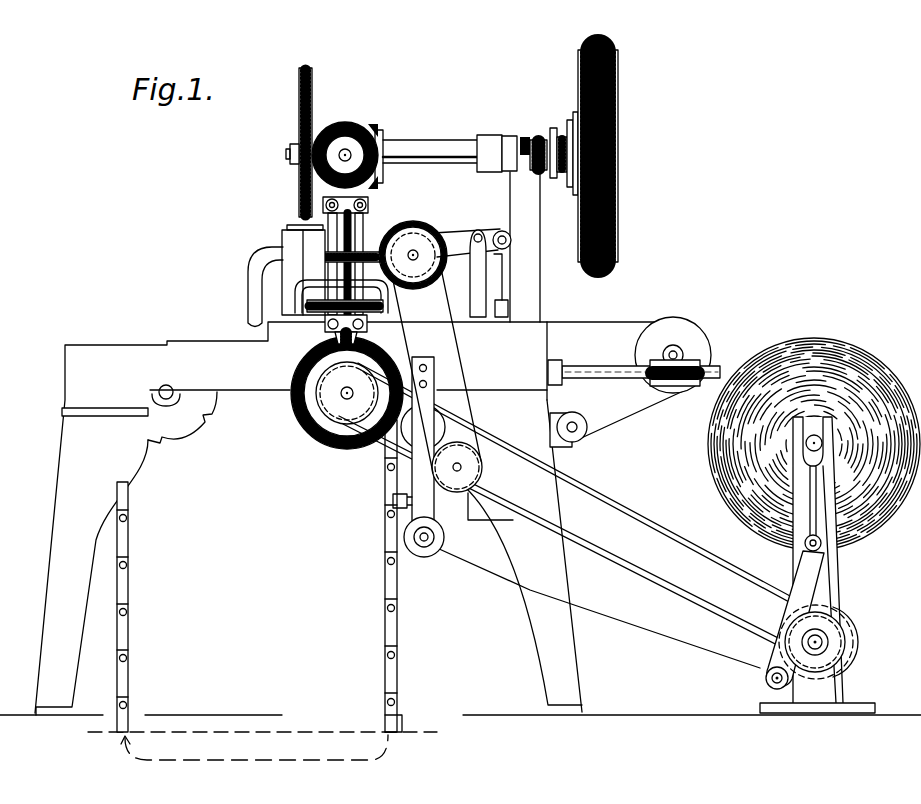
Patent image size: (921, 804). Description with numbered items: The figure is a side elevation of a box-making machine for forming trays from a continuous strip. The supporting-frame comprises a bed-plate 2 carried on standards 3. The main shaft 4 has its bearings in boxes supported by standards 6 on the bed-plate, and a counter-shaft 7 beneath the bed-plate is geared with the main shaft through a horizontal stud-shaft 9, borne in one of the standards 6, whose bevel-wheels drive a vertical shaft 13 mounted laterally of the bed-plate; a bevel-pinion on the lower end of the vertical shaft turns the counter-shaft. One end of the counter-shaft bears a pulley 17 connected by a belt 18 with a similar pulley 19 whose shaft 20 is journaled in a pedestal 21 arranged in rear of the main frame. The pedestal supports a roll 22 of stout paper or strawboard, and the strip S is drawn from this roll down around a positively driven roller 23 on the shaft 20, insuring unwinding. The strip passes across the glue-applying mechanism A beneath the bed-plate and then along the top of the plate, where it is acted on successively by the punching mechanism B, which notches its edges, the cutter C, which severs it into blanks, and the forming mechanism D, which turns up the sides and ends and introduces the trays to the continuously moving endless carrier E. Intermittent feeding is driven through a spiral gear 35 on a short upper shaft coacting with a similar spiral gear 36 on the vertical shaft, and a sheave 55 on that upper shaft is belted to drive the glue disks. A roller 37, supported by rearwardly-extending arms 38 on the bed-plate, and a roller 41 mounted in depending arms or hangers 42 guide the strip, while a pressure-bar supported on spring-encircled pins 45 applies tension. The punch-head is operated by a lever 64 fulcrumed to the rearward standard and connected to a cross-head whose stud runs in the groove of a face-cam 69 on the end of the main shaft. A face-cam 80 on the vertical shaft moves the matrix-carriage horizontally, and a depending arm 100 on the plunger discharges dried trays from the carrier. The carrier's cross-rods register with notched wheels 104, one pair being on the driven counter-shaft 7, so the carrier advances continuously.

The bed-plate 2 is at (421, 391).
The standards 3 is at (52, 570).
The main shaft 4 is at (433, 150).
The standards 6 is at (413, 222).
The counter-shaft 7 is at (341, 393).
The stud-shaft 9 is at (349, 150).
The vertical shaft 13 is at (346, 220).
The pulley 17 is at (332, 425).
The belt 18 is at (637, 512).
The pulley 19 is at (835, 632).
The shaft 20 is at (810, 640).
The pedestal 21 is at (838, 578).
The roll 22 is at (842, 360).
The roller 23 is at (848, 656).
The spiral gear 35 is at (423, 241).
The spiral gear 36 is at (330, 256).
The roller 37 is at (688, 334).
The arms 38 is at (592, 366).
The roller 41 is at (423, 558).
The arms or hangers 42 is at (11, 314).
The pins 45 is at (74, 424).
The sheave 55 is at (445, 243).
The lever 64 is at (500, 230).
The face-cam 69 is at (298, 118).
The face-cam 80 is at (312, 306).
The depending arm 100 is at (250, 270).
The wheels 104 is at (193, 437).
The glue-applying mechanism A is at (478, 510).
The punching mechanism B is at (487, 270).
The cutter C is at (394, 266).
The forming mechanism D is at (296, 254).
The endless carrier E is at (130, 625).
The strip S is at (630, 322).